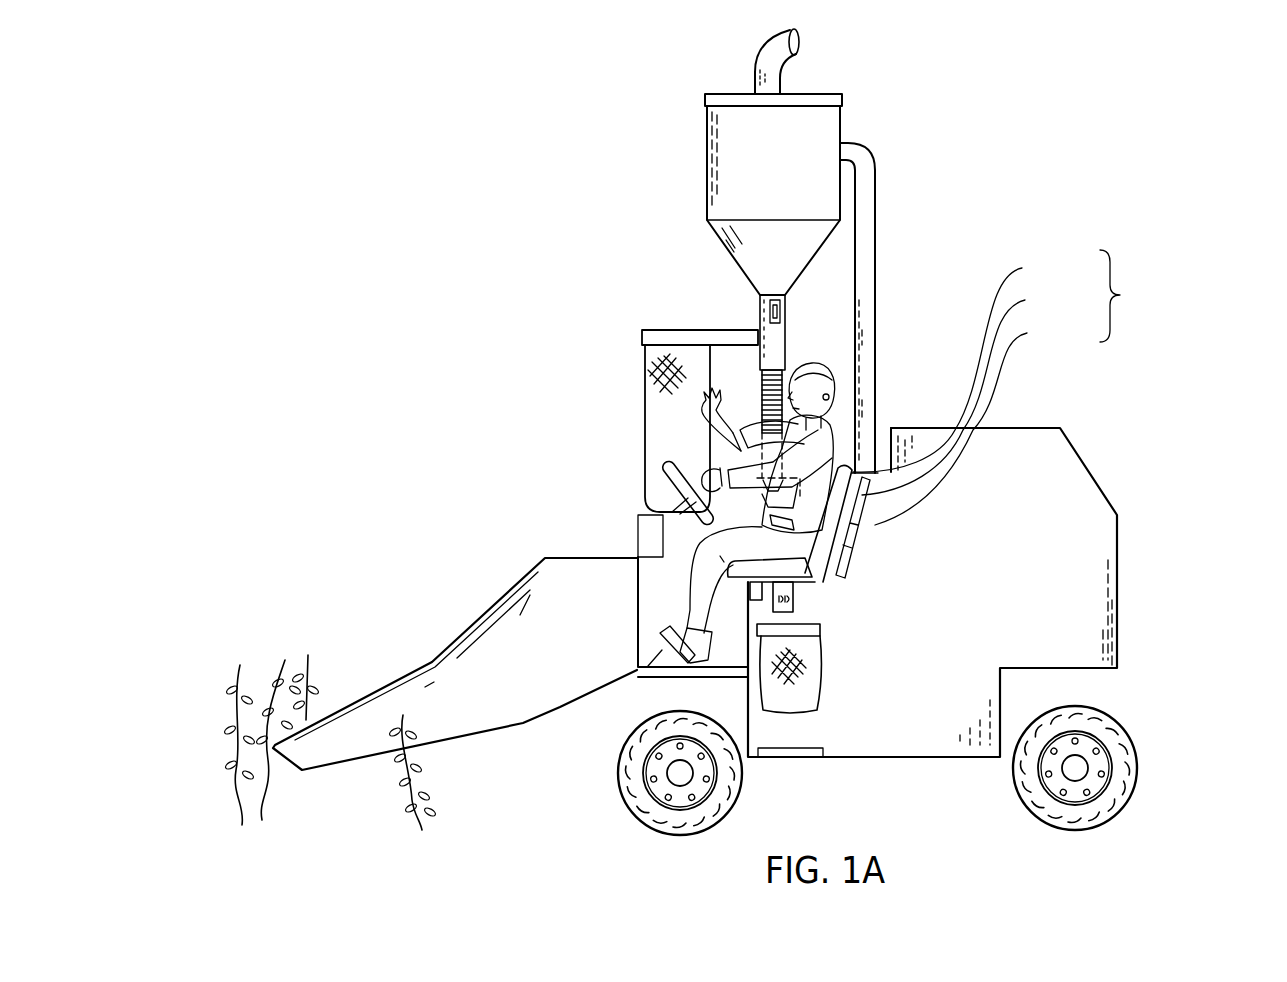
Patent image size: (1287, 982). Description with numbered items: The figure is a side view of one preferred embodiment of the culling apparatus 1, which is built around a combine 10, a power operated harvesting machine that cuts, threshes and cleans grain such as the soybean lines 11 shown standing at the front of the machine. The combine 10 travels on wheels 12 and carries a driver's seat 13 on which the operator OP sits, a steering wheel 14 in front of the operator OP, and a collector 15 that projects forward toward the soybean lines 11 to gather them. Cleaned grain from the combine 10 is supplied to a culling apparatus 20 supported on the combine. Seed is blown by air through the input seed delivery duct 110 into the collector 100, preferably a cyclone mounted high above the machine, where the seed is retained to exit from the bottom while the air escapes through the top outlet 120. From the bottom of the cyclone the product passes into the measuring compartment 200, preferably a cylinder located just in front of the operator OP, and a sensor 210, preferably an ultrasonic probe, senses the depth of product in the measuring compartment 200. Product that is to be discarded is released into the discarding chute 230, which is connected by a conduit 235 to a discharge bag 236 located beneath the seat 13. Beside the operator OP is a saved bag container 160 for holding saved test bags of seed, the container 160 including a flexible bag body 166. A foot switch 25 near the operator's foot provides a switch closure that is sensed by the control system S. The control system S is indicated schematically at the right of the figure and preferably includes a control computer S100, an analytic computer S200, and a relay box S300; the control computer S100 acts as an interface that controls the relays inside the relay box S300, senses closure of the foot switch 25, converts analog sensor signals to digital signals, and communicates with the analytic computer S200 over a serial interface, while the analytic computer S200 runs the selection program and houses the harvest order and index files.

The culling apparatus 1 is at (1122, 134).
The combine 10 is at (1122, 453).
The soybean lines 11 is at (266, 648).
The wheels 12 is at (1115, 717).
The driver's seat 13 is at (840, 567).
The steering wheel 14 is at (665, 478).
The collector 15 is at (517, 612).
The culling apparatus 20 is at (612, 285).
The foot switch 25 is at (636, 672).
The collector 100 is at (698, 137).
The input seed delivery duct 110 is at (872, 262).
The top outlet 120 is at (800, 44).
The saved bag container 160 is at (636, 367).
The flexible bag body 166 is at (655, 412).
The measuring compartment 200 is at (760, 385).
The sensor 210 is at (787, 310).
The discarding chute 230 is at (837, 473).
The conduit 235 is at (798, 602).
The discharge bag 236 is at (822, 678).
The operator OP is at (838, 389).
The control system S is at (1122, 295).
The control computer S100 is at (982, 420).
The analytic computer S200 is at (978, 386).
The relay box S300 is at (971, 359).